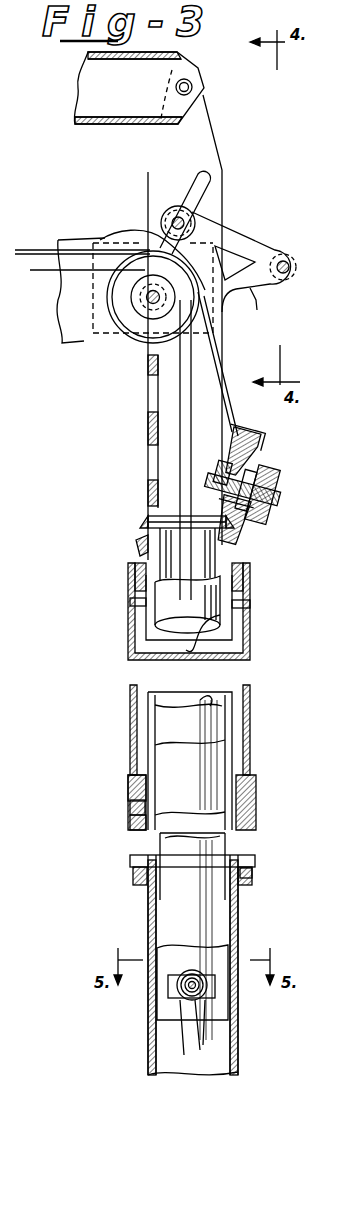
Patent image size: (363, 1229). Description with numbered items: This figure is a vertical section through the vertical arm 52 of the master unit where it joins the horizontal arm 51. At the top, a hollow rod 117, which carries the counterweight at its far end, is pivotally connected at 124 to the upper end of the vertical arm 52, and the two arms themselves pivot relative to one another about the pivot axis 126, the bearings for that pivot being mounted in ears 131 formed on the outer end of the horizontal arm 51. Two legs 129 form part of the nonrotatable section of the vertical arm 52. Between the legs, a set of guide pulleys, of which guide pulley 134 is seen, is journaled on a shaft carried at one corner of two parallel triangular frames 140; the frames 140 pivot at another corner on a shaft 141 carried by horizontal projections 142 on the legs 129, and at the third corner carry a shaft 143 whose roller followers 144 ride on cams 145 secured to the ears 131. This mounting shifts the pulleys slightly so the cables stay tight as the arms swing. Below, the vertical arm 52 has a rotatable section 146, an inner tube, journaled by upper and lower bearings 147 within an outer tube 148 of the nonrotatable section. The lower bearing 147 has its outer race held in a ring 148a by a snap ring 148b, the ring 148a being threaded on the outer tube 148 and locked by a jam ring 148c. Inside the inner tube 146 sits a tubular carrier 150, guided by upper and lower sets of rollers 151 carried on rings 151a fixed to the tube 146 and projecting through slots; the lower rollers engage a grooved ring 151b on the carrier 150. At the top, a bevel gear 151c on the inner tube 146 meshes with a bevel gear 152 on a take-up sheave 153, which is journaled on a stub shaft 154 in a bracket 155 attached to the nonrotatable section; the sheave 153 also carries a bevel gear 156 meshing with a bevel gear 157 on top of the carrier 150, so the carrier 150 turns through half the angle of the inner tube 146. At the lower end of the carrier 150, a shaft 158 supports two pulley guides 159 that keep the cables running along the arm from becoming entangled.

The hollow rod 117 is at (103, 126).
The pivotal connection 124 is at (192, 87).
The legs 129 is at (146, 177).
The shaft 143 is at (186, 222).
The roller followers 144 is at (171, 208).
The triangular frames 140 is at (236, 232).
The shaft 141 is at (290, 265).
The horizontal projections 142 is at (253, 291).
The cams 145 is at (113, 242).
The horizontal arm 51 is at (42, 320).
The ears 131 is at (90, 340).
The guide pulley 134 is at (150, 315).
The take-up sheave 153 is at (234, 440).
The stub shaft 154 is at (268, 476).
The bracket 155 is at (272, 502).
The bevel gear 152 is at (254, 536).
The bevel gear 156 is at (212, 478).
The bevel gear 157 is at (150, 522).
The bevel gear 151c is at (143, 547).
The bearings 147 is at (140, 578).
The rollers 151 is at (134, 600).
The rings 151a is at (244, 605).
The tubular carrier 150 is at (210, 633).
The rotatable section 146 is at (190, 700).
The vertical arm 52 is at (118, 754).
The outer tube 148 is at (130, 722).
The ring 148a is at (132, 785).
The jam ring 148c is at (128, 802).
The snap ring 148b is at (140, 818).
The grooved ring 151b is at (215, 872).
The shaft 158 is at (200, 985).
The pulley guides 159 is at (180, 988).
The pivot axis 126 is at (362, 428).